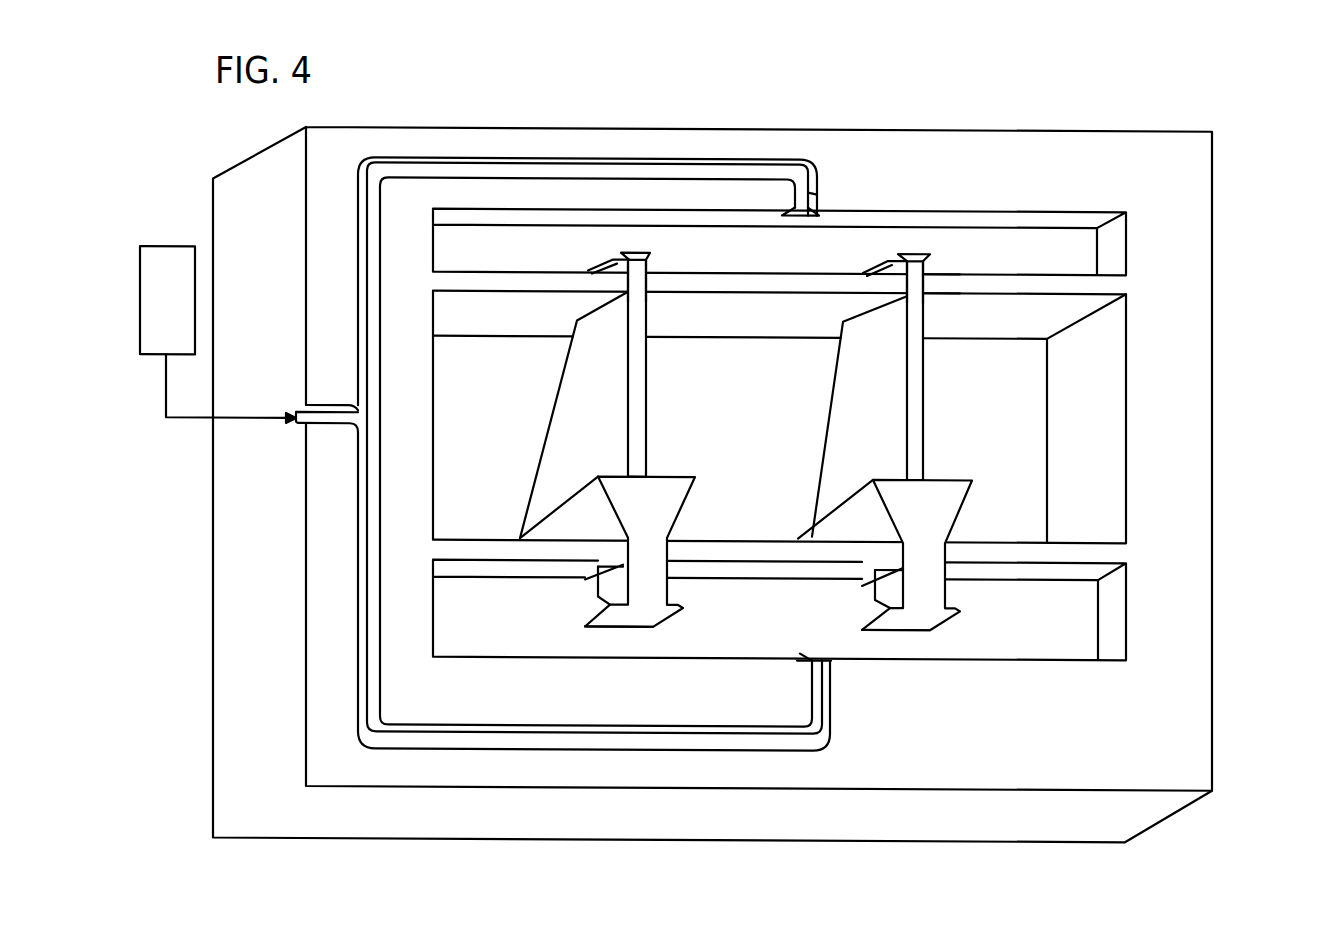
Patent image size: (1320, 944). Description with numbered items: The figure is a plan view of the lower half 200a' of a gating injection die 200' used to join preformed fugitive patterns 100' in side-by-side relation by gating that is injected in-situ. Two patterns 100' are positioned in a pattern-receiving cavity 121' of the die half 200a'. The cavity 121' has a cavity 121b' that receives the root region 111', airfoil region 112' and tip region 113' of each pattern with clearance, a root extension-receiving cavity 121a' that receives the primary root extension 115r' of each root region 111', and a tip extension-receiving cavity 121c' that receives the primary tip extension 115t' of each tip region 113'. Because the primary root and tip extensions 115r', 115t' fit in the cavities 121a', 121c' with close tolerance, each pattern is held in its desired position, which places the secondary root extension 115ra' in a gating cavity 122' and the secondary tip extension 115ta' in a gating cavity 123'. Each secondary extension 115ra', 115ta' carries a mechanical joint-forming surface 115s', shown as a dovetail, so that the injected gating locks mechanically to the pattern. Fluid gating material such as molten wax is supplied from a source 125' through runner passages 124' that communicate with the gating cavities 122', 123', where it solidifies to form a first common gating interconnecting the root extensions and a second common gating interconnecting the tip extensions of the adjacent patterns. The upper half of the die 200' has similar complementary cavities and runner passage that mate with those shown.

The preformed fugitive pattern 100' is at (675, 463).
The root region 111' is at (738, 514).
The airfoil region 112' is at (747, 369).
The tip region 113' is at (697, 415).
The mechanical joint-forming surface 115s' is at (718, 458).
The primary tip extension 115t' is at (775, 295).
The secondary tip extension 115ta' is at (775, 249).
The primary root extension 115r' is at (772, 565).
The secondary root extension 115ra' is at (757, 630).
The pattern-receiving cavity 121' is at (640, 416).
The root extension-receiving cavity 121a' is at (704, 584).
The pattern body cavity 121b' is at (779, 417).
The tip extension-receiving cavity 121c' is at (972, 301).
The gating cavity 122' is at (779, 610).
The gating cavity 123' is at (779, 242).
The injection runner passage 124' is at (563, 433).
The source 125' is at (218, 301).
The gating injection die 200' is at (748, 485).
The lower half of gating die 200a' is at (805, 459).